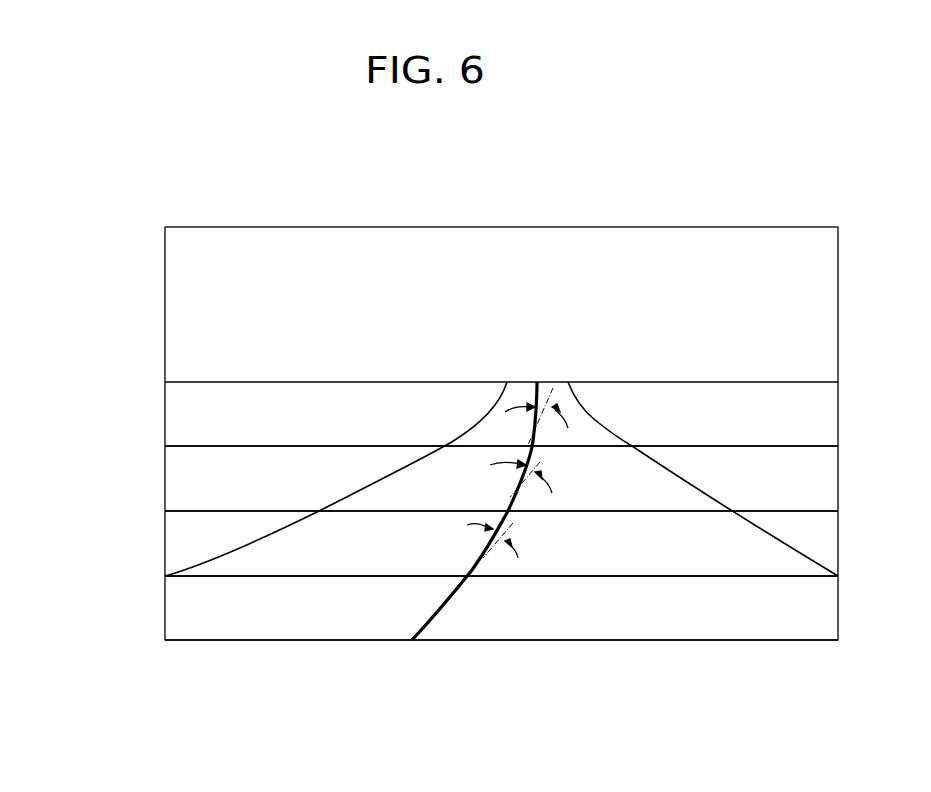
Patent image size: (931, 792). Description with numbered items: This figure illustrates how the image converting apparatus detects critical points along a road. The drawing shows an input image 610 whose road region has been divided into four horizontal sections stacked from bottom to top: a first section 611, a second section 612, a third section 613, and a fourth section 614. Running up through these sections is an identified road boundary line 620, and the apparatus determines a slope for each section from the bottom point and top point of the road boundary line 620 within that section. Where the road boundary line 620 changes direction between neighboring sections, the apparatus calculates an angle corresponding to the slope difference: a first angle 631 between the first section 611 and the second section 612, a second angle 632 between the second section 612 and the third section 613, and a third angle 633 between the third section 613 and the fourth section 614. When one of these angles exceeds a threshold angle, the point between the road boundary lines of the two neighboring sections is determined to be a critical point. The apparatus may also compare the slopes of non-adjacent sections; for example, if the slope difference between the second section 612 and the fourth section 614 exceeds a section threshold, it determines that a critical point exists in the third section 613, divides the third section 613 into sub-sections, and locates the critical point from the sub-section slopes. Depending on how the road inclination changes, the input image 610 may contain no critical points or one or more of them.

The input image 610 is at (638, 227).
The first section 611 is at (140, 609).
The second section 612 is at (140, 542).
The third section 613 is at (140, 479).
The fourth section 614 is at (140, 414).
The road boundary line 620 is at (437, 615).
The first angle 631 is at (505, 535).
The second angle 632 is at (527, 466).
The third angle 633 is at (539, 400).